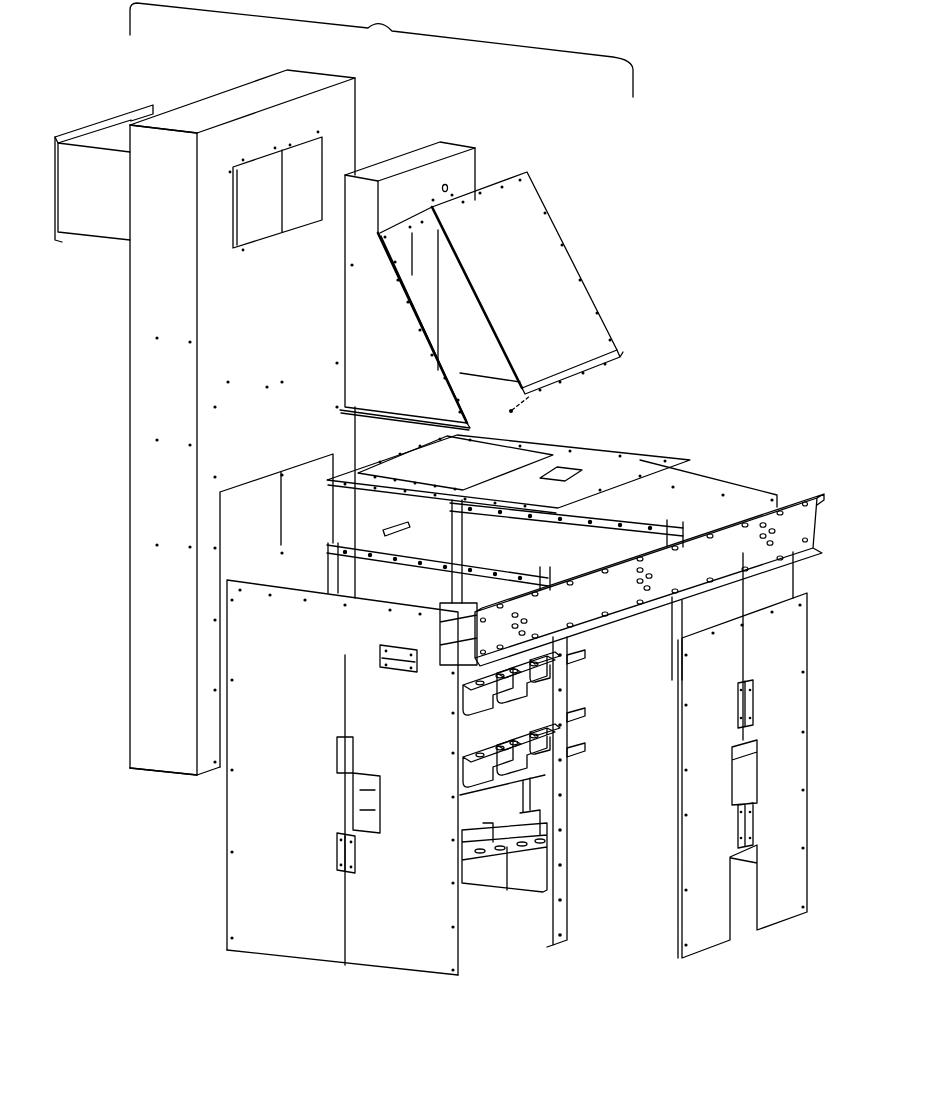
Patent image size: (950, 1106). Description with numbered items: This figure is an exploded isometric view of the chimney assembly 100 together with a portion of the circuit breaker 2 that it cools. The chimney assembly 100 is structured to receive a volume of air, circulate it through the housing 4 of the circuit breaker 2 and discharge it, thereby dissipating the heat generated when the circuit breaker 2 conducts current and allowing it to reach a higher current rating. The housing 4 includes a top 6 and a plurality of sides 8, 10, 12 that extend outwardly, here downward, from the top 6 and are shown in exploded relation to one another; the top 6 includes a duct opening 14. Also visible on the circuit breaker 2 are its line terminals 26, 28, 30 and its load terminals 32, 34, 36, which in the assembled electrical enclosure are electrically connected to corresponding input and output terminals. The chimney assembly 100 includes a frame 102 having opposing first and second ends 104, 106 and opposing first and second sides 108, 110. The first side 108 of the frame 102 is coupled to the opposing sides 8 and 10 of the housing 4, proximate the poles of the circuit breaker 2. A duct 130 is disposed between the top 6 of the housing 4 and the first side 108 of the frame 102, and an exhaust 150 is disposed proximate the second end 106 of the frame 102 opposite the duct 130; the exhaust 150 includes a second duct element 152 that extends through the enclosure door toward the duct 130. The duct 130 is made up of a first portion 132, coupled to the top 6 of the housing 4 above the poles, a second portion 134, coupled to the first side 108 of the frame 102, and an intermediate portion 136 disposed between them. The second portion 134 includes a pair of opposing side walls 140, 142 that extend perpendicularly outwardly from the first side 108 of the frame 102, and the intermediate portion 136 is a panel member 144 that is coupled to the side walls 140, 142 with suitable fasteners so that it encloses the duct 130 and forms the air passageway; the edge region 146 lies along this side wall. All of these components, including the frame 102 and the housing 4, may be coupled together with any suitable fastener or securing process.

The circuit breaker 2 is at (168, 951).
The housing 4 is at (280, 975).
The top 6 is at (610, 476).
The side 8 is at (281, 808).
The side 10 is at (700, 493).
The side 12 is at (720, 733).
The duct opening 14 is at (490, 463).
The line terminal 26 is at (527, 808).
The line terminal 28 is at (556, 776).
The line terminal 30 is at (595, 728).
The load terminal 32 is at (455, 702).
The load terminal 34 is at (500, 708).
The load terminal 36 is at (598, 670).
The chimney assembly 100 is at (400, 17).
The frame 102 is at (147, 310).
The first end 104 is at (103, 760).
The second end 106 is at (390, 84).
The first side 108 is at (247, 320).
The second side 110 is at (128, 476).
The duct 130 is at (505, 155).
The first portion 132 is at (372, 428).
The second portion 134 is at (317, 255).
The intermediate portion 136 is at (342, 303).
The side wall 140 is at (398, 357).
The side wall 142 is at (476, 327).
The panel member 144 is at (532, 267).
The housing edge flange 146 is at (402, 283).
The exhaust 150 is at (82, 110).
The second duct element 152 is at (103, 220).